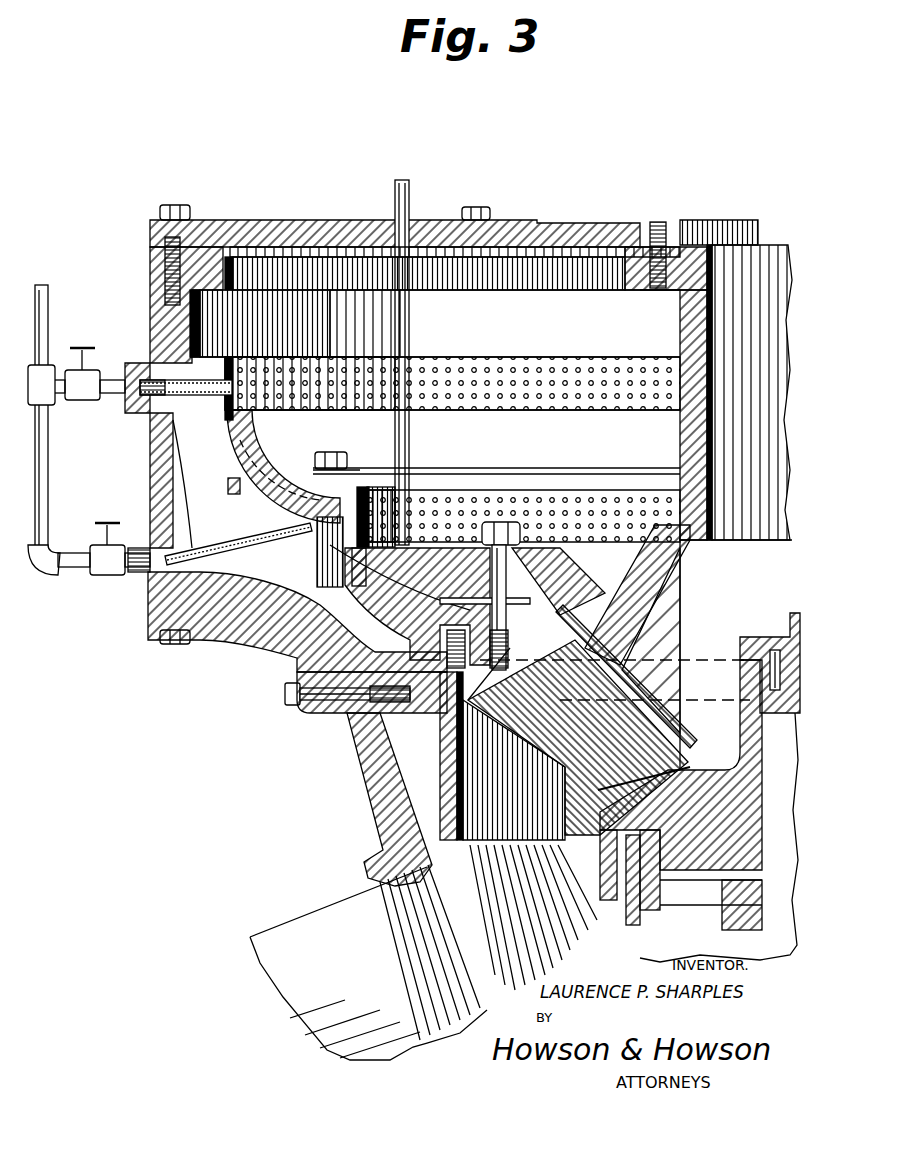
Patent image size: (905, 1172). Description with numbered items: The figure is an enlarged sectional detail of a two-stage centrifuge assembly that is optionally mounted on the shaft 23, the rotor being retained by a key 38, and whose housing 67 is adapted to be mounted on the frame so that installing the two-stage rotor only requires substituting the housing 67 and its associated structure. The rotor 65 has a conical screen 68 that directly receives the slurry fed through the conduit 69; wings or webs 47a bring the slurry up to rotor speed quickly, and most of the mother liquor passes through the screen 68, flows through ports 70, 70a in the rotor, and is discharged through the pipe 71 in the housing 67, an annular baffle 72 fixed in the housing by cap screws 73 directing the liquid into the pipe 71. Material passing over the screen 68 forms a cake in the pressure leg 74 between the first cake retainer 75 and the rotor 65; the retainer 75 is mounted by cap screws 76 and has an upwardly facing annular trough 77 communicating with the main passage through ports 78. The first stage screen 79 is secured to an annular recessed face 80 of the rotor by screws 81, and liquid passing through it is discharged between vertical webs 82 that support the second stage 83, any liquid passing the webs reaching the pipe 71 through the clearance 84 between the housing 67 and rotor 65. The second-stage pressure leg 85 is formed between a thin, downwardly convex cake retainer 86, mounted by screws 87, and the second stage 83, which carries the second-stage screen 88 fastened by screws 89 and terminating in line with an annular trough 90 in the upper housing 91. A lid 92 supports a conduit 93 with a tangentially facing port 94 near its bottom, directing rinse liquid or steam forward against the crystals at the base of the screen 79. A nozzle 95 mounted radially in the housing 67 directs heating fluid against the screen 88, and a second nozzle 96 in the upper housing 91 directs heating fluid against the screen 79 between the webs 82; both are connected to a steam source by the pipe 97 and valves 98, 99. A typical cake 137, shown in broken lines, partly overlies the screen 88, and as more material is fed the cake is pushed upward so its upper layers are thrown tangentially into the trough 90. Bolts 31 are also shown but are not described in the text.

The shaft 23 is at (768, 706).
The bolts 31 is at (172, 205).
The key 38 is at (776, 628).
The wings or webs 47a is at (682, 608).
The rotor 65 is at (720, 816).
The housing 67 is at (355, 758).
The conical screen 68 is at (618, 714).
The conduit 69 is at (730, 250).
The port 70 is at (515, 705).
The port 70a is at (668, 772).
The pipe 71 is at (330, 905).
The annular baffle 72 is at (538, 842).
The cap screws 73 is at (285, 694).
The pressure leg 74 is at (417, 606).
The first cake retainer 75 is at (466, 590).
The cap screws 76 is at (506, 556).
The annular trough 77 is at (572, 580).
The ports 78 is at (612, 612).
The first stage screen 79 is at (590, 490).
The annular recessed face 80 is at (400, 577).
The screws 81 is at (371, 564).
The vertical webs 82 is at (330, 572).
The second stage 83 is at (265, 508).
The clearance 84 is at (298, 648).
The second-stage pressure leg 85 is at (328, 455).
The cake retainer 86 is at (488, 468).
The screws 87 is at (348, 466).
The second-stage screen 88 is at (515, 357).
The screws 89 is at (228, 488).
The annular trough 90 is at (225, 315).
The upper housing 91 is at (150, 266).
The lid 92 is at (303, 220).
The conduit 93 is at (410, 188).
The tangentially facing port 94 is at (405, 492).
The nozzle 95 is at (208, 395).
The second nozzle 96 is at (292, 538).
The pipe 97 is at (48, 466).
The valve 98 is at (88, 370).
The valve 99 is at (96, 575).
The cake 137 is at (255, 428).